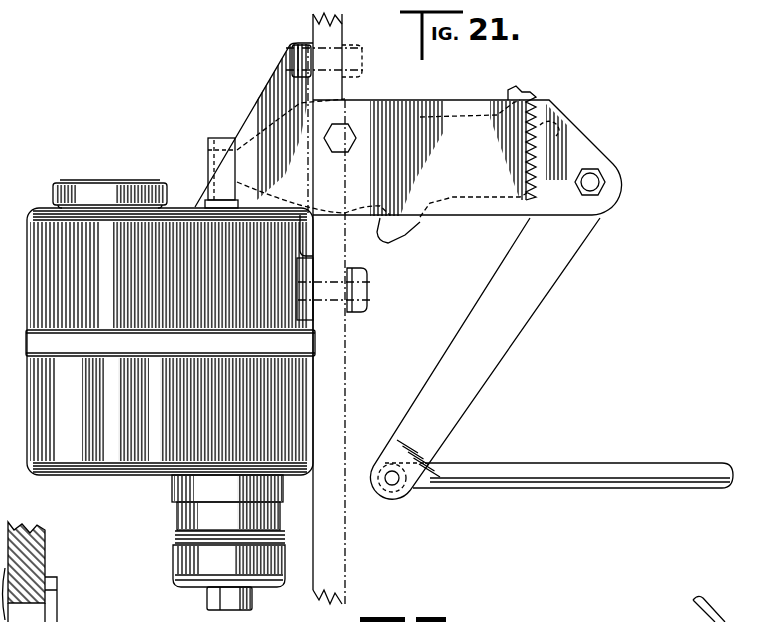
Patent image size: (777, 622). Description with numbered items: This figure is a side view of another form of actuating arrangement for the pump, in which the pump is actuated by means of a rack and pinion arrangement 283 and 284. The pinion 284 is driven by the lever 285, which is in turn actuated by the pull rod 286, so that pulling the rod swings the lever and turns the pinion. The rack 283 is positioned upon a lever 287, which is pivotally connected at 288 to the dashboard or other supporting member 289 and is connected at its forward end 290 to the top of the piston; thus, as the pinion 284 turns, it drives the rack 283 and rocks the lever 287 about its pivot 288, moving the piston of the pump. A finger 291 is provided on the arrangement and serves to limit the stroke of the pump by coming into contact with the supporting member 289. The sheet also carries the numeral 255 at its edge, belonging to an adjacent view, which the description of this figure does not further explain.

The rack 283 is at (530, 91).
The pinion 284 is at (584, 124).
The lever 285 is at (508, 326).
The pull rod 286 is at (583, 470).
The lever 287 is at (446, 124).
The pivotal connection 288 is at (346, 130).
The supporting member 289 is at (338, 339).
The forward end 290 is at (228, 119).
The finger 291 is at (390, 241).
The adjacent figure element 255 is at (698, 616).